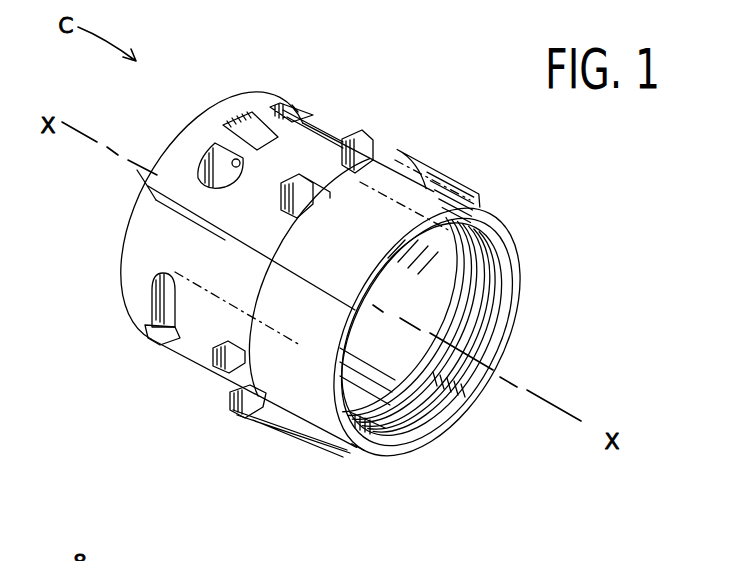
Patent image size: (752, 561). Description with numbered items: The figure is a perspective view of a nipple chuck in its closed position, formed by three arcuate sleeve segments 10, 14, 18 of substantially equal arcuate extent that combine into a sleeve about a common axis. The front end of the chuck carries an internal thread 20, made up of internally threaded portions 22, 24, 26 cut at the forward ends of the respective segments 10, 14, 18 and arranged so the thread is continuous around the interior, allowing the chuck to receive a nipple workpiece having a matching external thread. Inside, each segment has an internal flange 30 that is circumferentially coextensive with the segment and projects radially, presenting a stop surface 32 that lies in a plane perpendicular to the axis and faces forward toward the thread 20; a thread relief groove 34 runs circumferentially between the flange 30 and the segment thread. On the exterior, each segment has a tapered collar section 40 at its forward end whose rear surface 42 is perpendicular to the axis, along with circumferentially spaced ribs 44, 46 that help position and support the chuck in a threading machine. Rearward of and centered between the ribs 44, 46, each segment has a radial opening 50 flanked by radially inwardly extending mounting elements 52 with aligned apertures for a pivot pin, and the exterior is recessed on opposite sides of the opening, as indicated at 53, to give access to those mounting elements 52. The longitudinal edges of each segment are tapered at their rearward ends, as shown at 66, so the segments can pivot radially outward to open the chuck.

The arcuate sleeve segment 10 is at (305, 130).
The arcuate sleeve segment 14 is at (508, 311).
The arcuate sleeve segment 18 is at (140, 253).
The internal thread 20 is at (454, 419).
The internally threaded portion 22 is at (498, 228).
The internally threaded portion 24 is at (480, 336).
The internally threaded portion 26 is at (390, 438).
The internal flange 30 is at (460, 277).
The stop surface 32 is at (468, 295).
The thread relief groove 34 is at (443, 371).
The tapered collar section 40 is at (430, 185).
The rear surface 42 is at (398, 151).
The rib 44 is at (300, 183).
The rib 46 is at (363, 140).
The opening 50 is at (238, 115).
The mounting element 52 is at (218, 147).
The recess 53 is at (200, 165).
The tapered edge 66 is at (150, 190).